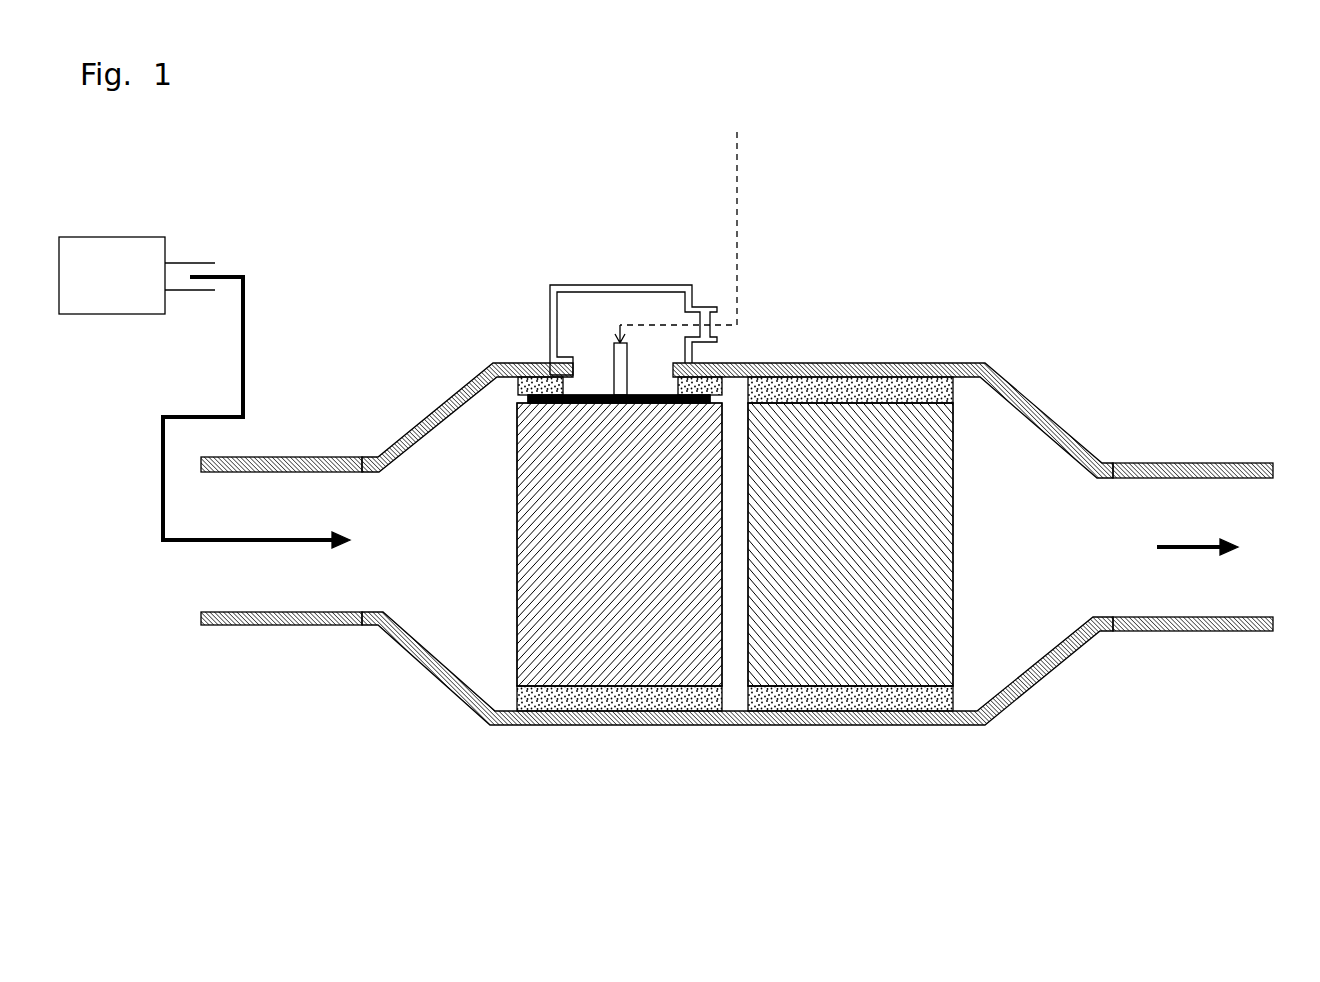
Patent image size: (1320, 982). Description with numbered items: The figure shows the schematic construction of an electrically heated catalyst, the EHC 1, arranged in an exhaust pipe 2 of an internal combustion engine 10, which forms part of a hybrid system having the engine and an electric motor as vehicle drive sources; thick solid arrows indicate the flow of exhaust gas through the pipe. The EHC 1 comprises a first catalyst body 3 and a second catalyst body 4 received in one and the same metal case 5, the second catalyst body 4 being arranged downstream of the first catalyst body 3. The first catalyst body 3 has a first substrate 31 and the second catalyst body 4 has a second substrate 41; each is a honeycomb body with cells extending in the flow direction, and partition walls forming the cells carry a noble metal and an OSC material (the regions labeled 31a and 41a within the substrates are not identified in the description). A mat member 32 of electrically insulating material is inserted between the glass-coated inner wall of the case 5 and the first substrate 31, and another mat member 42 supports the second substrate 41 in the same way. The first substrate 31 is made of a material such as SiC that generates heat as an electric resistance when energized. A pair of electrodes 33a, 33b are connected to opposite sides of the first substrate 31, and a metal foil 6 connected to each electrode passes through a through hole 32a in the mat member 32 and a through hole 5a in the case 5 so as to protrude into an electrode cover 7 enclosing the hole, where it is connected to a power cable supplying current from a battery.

The EHC 1 is at (1004, 291).
The exhaust pipe 2 is at (198, 262).
The first catalyst body 3 is at (488, 465).
The second catalyst body 4 is at (981, 477).
The case 5 is at (737, 487).
The through hole 5a is at (588, 372).
The metal foil 6 is at (590, 372).
The electrode cover 7 is at (633, 285).
The internal combustion engine 10 is at (112, 237).
The first substrate 31 is at (517, 607).
The cell wall of carrier 31a is at (582, 637).
The mat member 32 is at (657, 545).
The through hole 32a is at (647, 387).
The electrode 33a is at (700, 355).
The electrode 33b is at (619, 399).
The second substrate 41 is at (953, 607).
The cell wall of filter 41a is at (873, 640).
The mat member 42 is at (793, 700).